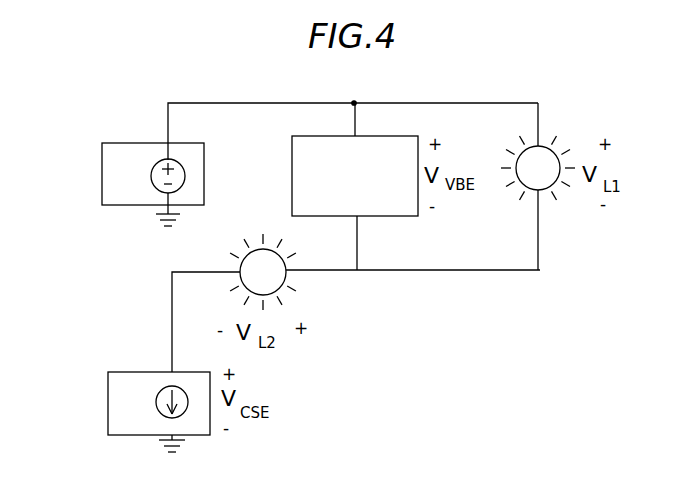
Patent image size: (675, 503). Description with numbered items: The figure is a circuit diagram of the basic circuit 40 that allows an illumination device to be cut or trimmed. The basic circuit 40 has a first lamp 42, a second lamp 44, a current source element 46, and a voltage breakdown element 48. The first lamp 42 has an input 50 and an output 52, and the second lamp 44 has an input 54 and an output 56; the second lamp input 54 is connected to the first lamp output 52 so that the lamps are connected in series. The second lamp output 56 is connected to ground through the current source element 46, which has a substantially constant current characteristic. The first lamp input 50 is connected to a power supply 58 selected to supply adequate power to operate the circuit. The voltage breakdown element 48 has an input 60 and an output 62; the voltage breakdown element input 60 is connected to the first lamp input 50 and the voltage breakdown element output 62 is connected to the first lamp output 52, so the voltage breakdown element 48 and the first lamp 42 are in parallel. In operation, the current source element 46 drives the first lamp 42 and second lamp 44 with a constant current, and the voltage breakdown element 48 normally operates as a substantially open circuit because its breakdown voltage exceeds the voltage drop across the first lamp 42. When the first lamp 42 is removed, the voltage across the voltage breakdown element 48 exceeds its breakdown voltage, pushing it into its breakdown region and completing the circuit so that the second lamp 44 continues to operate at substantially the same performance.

The basic circuit 40 is at (158, 90).
The first lamp 42 is at (554, 190).
The second lamp 44 is at (284, 286).
The current source element 46 is at (108, 405).
The voltage breakdown element 48 is at (292, 144).
The first lamp input 50 is at (538, 118).
The first lamp output 52 is at (538, 228).
The second lamp input 54 is at (338, 272).
The second lamp output 56 is at (188, 272).
The power supply 58 is at (102, 168).
The voltage breakdown element input 60 is at (356, 118).
The voltage breakdown element output 62 is at (357, 258).